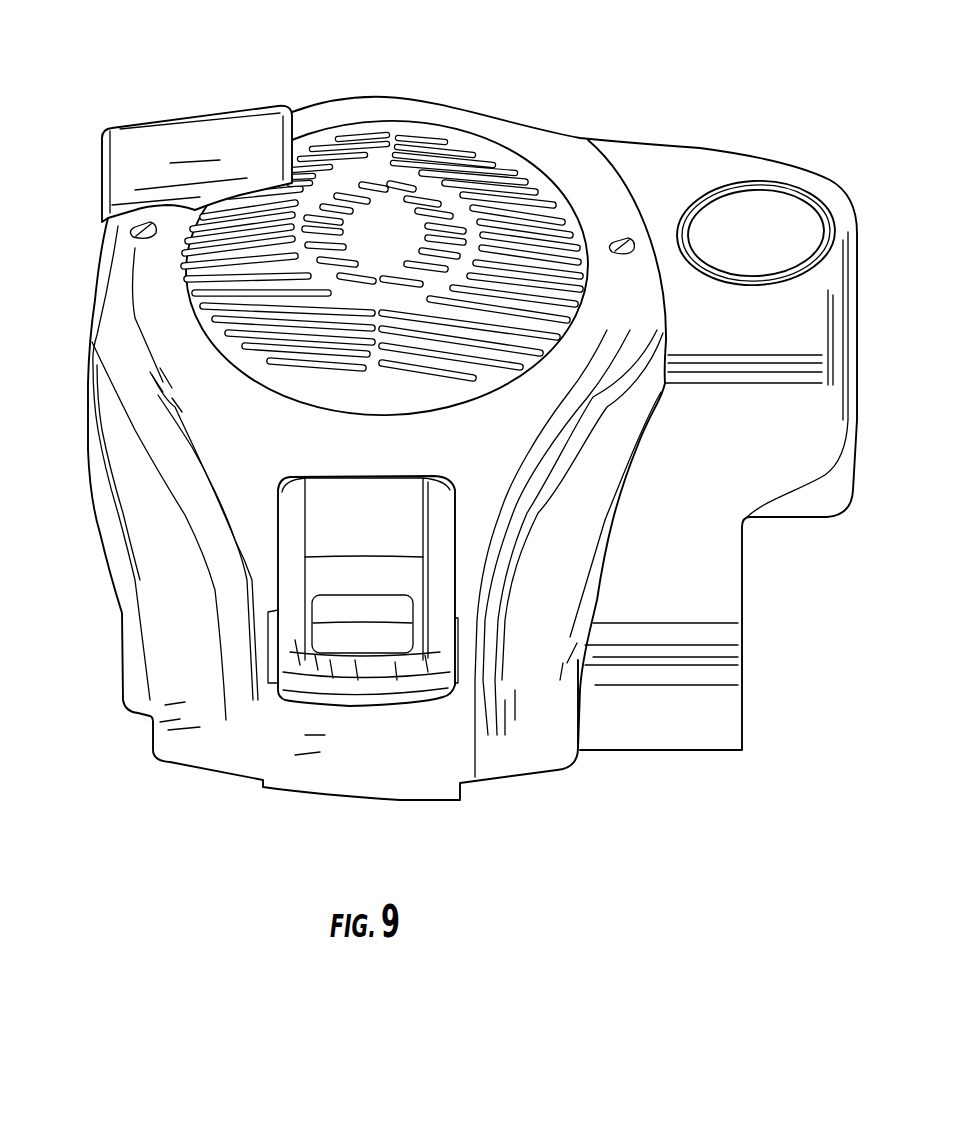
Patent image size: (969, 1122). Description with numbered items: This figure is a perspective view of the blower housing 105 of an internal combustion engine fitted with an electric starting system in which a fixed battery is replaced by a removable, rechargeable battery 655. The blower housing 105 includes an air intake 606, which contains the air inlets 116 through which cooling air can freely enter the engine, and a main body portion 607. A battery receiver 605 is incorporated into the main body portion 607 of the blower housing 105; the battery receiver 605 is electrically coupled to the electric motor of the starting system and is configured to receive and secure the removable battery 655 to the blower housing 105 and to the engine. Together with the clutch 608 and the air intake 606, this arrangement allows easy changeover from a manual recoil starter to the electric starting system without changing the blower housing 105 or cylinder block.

The blower housing 105 is at (158, 373).
The air inlets 116 is at (543, 192).
The battery receiver 605 is at (275, 552).
The air intake 606 is at (388, 122).
The main body portion 607 is at (675, 167).
The clutch 608 is at (222, 534).
The removable battery 655 is at (345, 607).